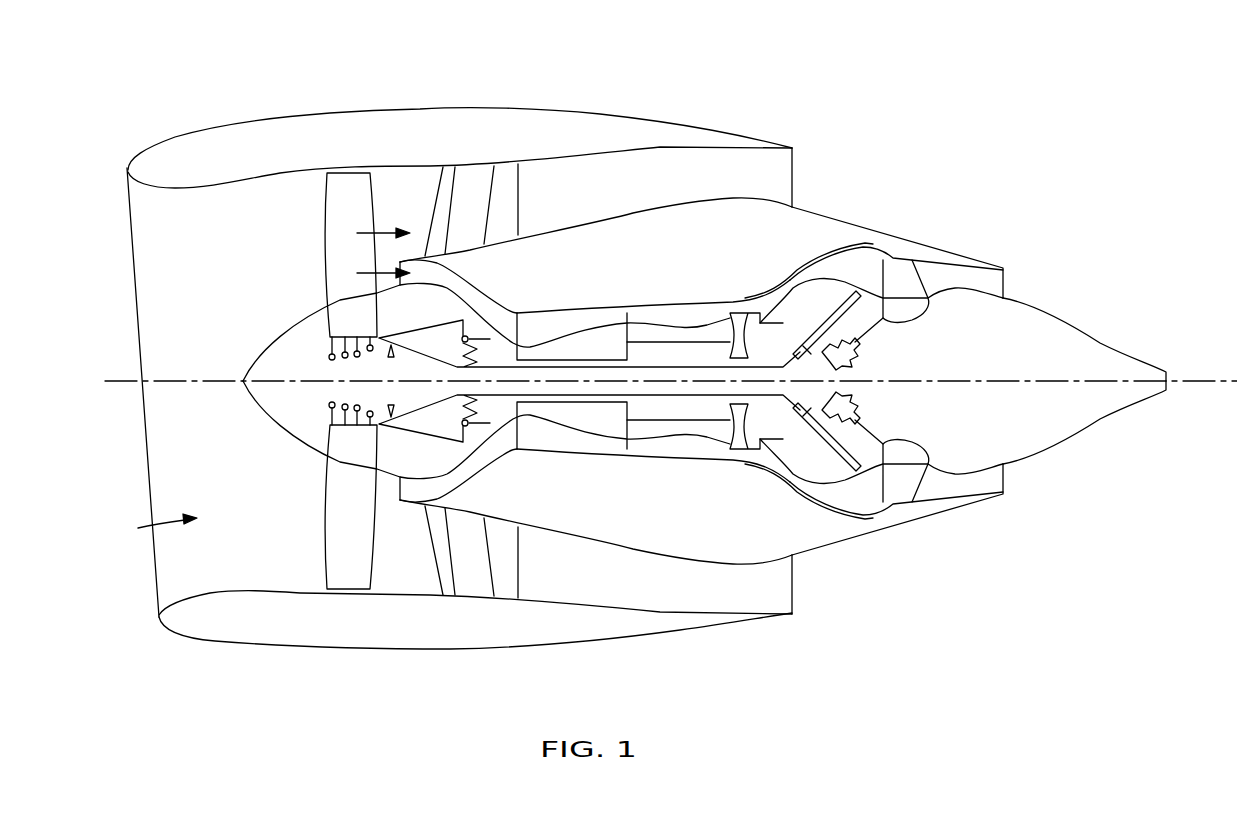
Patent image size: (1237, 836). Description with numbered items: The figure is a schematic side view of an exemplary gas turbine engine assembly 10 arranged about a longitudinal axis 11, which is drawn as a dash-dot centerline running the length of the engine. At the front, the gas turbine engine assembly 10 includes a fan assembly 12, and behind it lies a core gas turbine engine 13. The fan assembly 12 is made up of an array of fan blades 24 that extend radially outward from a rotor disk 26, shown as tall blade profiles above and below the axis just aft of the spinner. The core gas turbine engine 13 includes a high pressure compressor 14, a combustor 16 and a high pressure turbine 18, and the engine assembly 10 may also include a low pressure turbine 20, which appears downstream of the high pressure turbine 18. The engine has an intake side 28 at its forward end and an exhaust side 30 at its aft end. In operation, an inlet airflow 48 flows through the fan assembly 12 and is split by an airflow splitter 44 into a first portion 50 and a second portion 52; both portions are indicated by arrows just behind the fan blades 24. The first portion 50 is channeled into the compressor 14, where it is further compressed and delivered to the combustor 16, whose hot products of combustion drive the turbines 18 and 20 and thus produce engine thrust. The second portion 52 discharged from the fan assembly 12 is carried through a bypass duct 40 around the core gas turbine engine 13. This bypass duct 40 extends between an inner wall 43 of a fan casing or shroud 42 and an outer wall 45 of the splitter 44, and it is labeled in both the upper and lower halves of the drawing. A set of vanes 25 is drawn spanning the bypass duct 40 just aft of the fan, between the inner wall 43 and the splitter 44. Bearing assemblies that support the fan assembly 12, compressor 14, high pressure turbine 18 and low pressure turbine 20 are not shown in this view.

The gas turbine engine assembly 10 is at (652, 337).
The longitudinal axis 11 is at (170, 380).
The fan assembly 12 is at (521, 381).
The core gas turbine engine 13 is at (783, 372).
The high pressure compressor 14 is at (522, 323).
The combustor 16 is at (700, 320).
The high pressure turbine 18 is at (740, 450).
The low pressure turbine 20 is at (830, 267).
The fan blades 24 is at (340, 233).
The outlet guide vanes 25 is at (443, 173).
The rotor disk 26 is at (343, 440).
The intake side 28 is at (485, 363).
The exhaust side 30 is at (826, 154).
The bypass duct 40 is at (522, 365).
The fan casing or shroud 42 is at (585, 113).
The inner wall 43 is at (660, 147).
The airflow splitter 44 is at (533, 525).
The outer wall 45 is at (840, 217).
The inlet airflow 48 is at (152, 529).
The first portion 50 is at (370, 272).
The second portion 52 is at (370, 230).